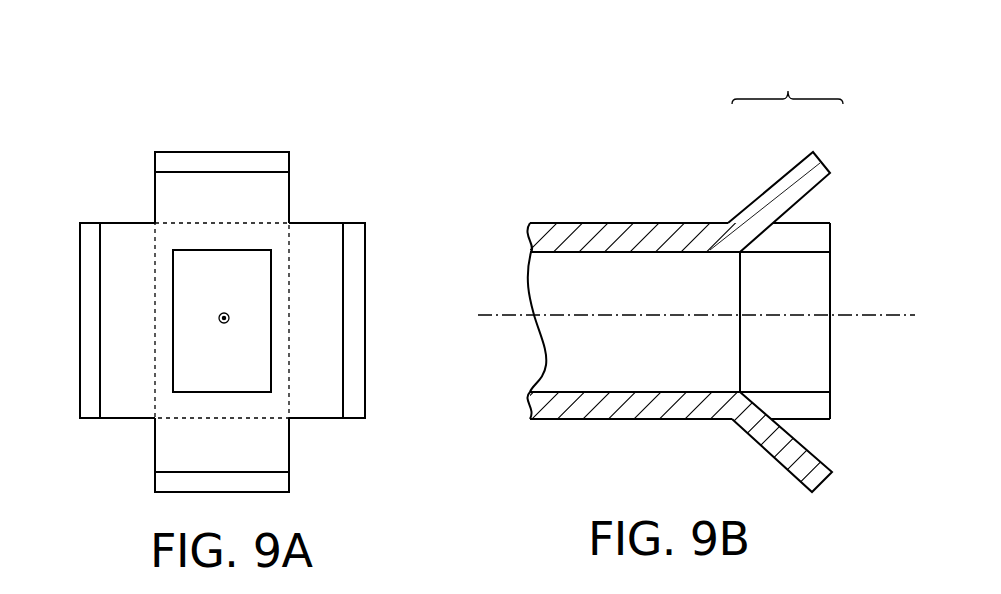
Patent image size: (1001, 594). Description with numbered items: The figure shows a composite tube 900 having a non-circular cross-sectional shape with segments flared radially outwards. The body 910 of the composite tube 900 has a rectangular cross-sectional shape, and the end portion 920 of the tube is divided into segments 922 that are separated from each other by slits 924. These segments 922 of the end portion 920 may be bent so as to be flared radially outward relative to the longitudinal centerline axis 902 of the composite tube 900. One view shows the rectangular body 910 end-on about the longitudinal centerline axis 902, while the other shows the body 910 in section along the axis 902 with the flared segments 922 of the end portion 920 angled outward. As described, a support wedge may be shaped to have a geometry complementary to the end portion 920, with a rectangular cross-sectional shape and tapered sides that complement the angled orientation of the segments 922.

In FIG. 9A, the composite tube 900 is at (128, 122).
In FIG. 9B, the composite tube 900 is at (493, 121).
In FIG. 9A, the longitudinal centerline axis 902 is at (224, 312).
In FIG. 9B, the longitudinal centerline axis 902 is at (505, 315).
In FIG. 9B, the body 910 is at (604, 239).
In FIG. 9B, the end portion 920 is at (787, 77).
In FIG. 9A, the segments 922 is at (315, 242).
In FIG. 9B, the segments 922 is at (780, 197).
In FIG. 9A, the slits 924 is at (114, 201).
In FIG. 9B, the slits 924 is at (818, 203).